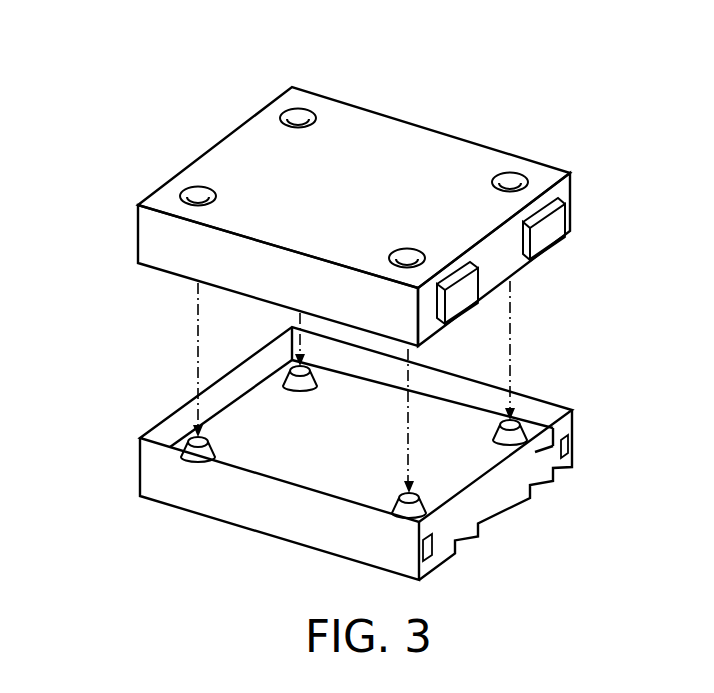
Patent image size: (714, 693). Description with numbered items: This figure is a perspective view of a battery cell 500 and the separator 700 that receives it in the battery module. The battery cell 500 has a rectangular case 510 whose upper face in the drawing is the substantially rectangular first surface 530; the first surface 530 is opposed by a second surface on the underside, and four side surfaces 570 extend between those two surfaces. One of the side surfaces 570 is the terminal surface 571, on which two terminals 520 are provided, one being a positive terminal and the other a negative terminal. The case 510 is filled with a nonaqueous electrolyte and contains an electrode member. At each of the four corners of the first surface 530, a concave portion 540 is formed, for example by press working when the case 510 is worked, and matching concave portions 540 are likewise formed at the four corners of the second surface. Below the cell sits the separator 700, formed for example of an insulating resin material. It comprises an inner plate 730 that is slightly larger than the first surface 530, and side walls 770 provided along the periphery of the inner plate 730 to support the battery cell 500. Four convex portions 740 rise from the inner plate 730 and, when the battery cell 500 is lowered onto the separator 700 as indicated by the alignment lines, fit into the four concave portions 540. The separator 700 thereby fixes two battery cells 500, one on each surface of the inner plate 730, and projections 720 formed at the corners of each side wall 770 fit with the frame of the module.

The battery cell 500 is at (262, 76).
The rectangular case 510 is at (387, 113).
The terminals 520 is at (547, 232).
The first surface 530 is at (463, 162).
The concave portions 540 is at (299, 117).
The side surfaces 570 is at (138, 236).
The terminal surface 571 is at (508, 262).
The separator 700 is at (119, 499).
The projections 720 is at (569, 446).
The inner plate 730 is at (265, 405).
The convex portions 740 is at (513, 422).
The side walls 770 is at (138, 472).